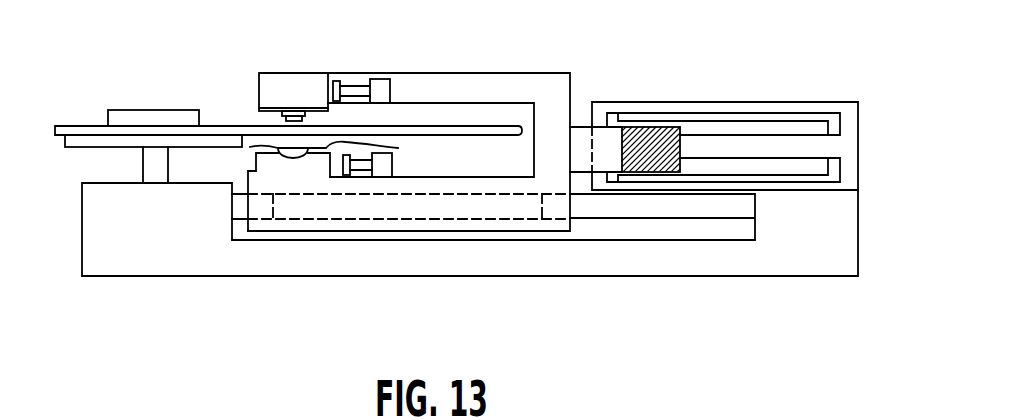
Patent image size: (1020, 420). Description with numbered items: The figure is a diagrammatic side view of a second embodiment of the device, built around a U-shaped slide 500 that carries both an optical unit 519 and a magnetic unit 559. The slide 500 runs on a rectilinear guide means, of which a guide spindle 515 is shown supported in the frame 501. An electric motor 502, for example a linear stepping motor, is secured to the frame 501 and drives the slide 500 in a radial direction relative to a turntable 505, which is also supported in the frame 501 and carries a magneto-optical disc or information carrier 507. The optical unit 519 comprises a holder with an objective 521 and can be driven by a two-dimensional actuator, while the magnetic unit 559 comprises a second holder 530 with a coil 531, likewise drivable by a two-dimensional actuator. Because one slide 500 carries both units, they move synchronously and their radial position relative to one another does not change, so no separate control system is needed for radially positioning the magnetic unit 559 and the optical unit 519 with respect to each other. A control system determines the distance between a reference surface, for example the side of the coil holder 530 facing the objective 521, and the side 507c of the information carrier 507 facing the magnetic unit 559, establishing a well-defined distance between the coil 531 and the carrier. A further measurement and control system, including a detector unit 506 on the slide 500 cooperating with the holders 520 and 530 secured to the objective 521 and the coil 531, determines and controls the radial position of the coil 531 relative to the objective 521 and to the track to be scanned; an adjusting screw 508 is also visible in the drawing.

The slide 500 is at (520, 87).
The frame 501 is at (830, 259).
The electric motor 502 is at (607, 104).
The turntable 505 is at (113, 148).
The detector unit 506 is at (382, 177).
The information carrier 507 is at (87, 131).
The side of the information carrier 507c is at (450, 125).
The adjusting screw 508 is at (385, 84).
The guide spindle 515 is at (663, 212).
The optical unit 519 is at (316, 170).
The holder 520 is at (375, 149).
The objective 521 is at (250, 147).
The second holder 530 is at (284, 111).
The coil 531 is at (286, 120).
The magnetic unit 559 is at (313, 83).